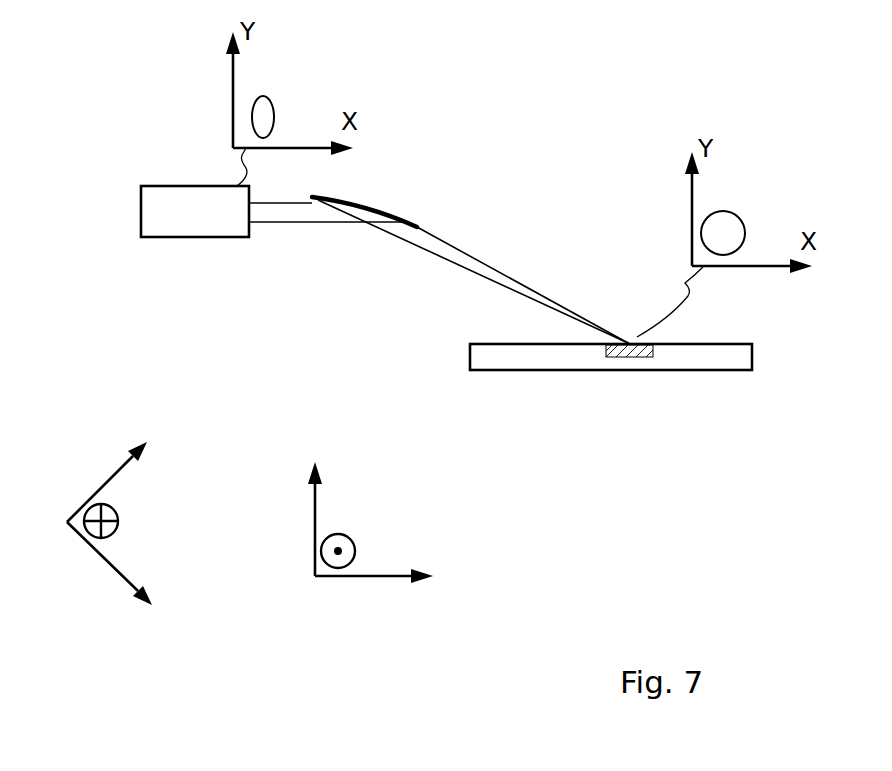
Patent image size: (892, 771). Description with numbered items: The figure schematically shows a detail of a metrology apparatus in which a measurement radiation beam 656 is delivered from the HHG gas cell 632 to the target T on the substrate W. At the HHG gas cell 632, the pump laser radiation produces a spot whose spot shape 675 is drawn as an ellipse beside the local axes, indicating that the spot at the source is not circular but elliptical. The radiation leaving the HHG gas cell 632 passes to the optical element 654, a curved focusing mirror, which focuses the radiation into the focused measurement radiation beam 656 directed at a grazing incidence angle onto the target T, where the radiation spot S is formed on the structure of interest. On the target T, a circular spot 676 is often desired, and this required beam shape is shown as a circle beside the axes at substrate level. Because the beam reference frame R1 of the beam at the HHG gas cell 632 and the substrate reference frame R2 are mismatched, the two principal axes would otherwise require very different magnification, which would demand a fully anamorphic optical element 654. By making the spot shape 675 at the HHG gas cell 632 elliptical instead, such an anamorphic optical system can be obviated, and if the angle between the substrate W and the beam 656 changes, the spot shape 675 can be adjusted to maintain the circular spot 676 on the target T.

The HHG gas cell 632 is at (155, 212).
The spot shape 675 is at (252, 124).
The optical element 654 is at (373, 205).
The measurement radiation beam 656 is at (441, 256).
The circular spot 676 is at (705, 245).
The substrate W is at (470, 356).
The target structure T is at (628, 344).
The radiation spot S is at (623, 335).
The beam reference frame R1 is at (123, 553).
The substrate reference frame R2 is at (370, 559).